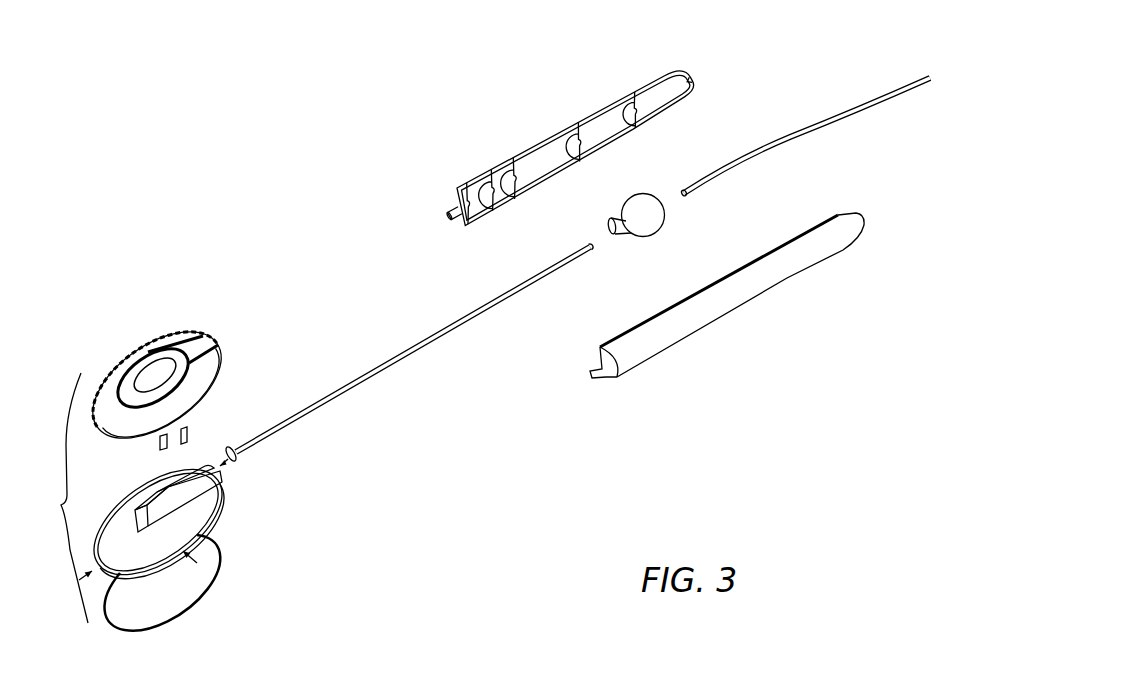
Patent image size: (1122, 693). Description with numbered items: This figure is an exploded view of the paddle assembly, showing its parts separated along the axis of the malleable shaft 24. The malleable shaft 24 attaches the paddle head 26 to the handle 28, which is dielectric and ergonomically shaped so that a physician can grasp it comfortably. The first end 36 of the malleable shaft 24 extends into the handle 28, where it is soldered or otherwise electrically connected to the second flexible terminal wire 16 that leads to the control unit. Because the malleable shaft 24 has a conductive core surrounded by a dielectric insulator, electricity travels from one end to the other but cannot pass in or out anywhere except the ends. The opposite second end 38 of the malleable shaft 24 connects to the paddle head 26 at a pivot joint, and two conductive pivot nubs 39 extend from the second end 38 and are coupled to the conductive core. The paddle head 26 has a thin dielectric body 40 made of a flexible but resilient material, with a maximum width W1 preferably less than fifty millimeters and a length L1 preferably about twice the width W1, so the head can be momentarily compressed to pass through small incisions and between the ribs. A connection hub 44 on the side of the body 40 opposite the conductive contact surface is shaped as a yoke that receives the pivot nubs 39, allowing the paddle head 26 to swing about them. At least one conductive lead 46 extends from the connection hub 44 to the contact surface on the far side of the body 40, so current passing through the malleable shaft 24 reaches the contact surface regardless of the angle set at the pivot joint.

The second flexible terminal wire 16 is at (770, 148).
The malleable shaft 24 is at (347, 383).
The paddle head 26 is at (61, 504).
The handle 28 is at (722, 297).
The first end 36 is at (592, 243).
The second end 38 is at (235, 462).
The pivot nubs 39 is at (238, 456).
The body 40 is at (125, 493).
The connection hub 44 is at (170, 508).
The conductive lead 46 is at (186, 437).
The maximum width W1 is at (205, 537).
The length L1 is at (79, 580).